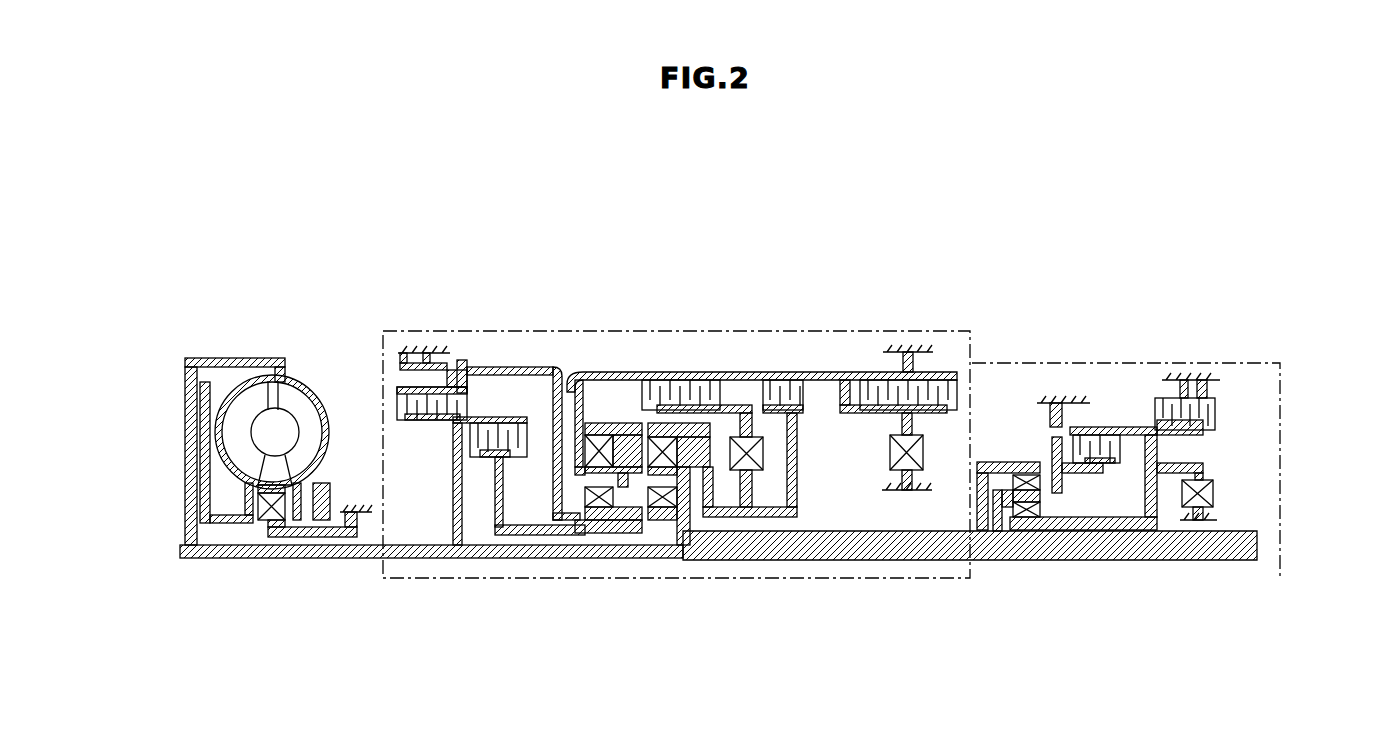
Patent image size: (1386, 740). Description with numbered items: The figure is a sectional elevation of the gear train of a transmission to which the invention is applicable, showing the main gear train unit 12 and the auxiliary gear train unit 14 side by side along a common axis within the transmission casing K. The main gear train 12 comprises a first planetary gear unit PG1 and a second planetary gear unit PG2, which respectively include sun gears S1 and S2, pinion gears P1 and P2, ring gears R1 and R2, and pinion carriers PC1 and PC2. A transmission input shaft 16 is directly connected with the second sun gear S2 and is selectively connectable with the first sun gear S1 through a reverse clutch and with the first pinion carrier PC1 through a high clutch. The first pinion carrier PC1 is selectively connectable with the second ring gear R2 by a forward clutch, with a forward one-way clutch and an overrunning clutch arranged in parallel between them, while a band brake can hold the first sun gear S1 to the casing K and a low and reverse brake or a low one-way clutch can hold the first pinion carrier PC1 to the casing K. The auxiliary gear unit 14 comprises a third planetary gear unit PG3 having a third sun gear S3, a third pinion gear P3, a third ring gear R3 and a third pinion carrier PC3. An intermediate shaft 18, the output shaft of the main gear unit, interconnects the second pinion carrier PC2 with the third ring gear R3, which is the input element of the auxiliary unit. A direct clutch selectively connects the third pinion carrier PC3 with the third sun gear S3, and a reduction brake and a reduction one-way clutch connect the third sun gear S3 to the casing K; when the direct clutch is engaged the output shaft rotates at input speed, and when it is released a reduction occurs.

The main gear train unit 12 is at (856, 331).
The auxiliary gear train unit 14 is at (1266, 362).
The transmission input shaft 16 is at (420, 559).
The intermediate shaft 18 is at (875, 548).
The transmission casing K is at (400, 345).
The first planetary gear unit PG1 is at (582, 468).
The first ring gear R1 is at (605, 423).
The first pinion gear P1 is at (608, 470).
The first sun gear S1 is at (597, 500).
The first pinion carrier PC1 is at (627, 522).
The second planetary gear unit PG2 is at (723, 448).
The second ring gear R2 is at (640, 423).
The second pinion gear P2 is at (675, 475).
The second sun gear S2 is at (660, 507).
The second pinion carrier PC2 is at (705, 518).
The third planetary gear unit PG3 is at (1059, 434).
The third ring gear R3 is at (1028, 467).
The third pinion gear P3 is at (1022, 494).
The third sun gear S3 is at (1028, 571).
The third pinion carrier PC3 is at (1047, 524).